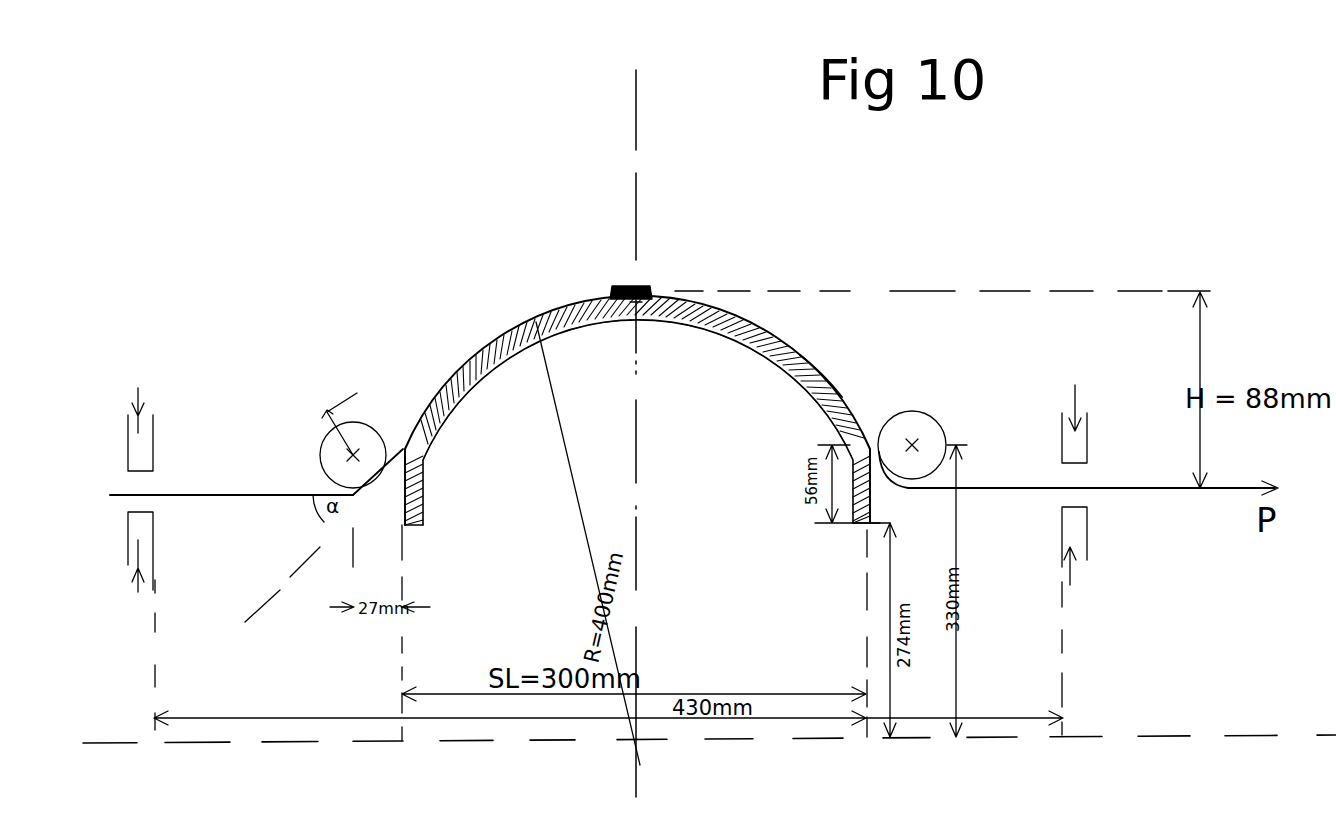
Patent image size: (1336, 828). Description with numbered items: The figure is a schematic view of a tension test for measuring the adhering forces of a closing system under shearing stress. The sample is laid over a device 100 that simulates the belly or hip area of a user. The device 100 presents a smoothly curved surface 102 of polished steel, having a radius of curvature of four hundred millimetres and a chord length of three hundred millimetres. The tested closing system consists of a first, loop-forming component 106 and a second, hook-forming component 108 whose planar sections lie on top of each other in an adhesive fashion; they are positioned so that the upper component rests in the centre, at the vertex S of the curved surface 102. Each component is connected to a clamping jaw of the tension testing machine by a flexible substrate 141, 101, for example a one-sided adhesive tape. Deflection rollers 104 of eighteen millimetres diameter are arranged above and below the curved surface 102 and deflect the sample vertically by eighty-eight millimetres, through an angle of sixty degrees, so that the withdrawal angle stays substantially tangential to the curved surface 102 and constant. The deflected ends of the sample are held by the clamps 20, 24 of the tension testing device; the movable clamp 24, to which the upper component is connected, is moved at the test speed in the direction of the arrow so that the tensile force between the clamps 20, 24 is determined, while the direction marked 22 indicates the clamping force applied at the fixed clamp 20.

The device 100 is at (452, 782).
The flexible substrate 101 is at (482, 348).
The curved surface 102 is at (772, 345).
The deflection rollers 104 is at (883, 412).
The loop-forming component 106 is at (612, 292).
The hook-forming component 108 is at (655, 294).
The flexible substrate 141 is at (818, 362).
The clamp 20 is at (125, 450).
The clamping force direction 22 is at (131, 355).
The movable clamp 24 is at (1087, 428).
The vertex S is at (653, 305).